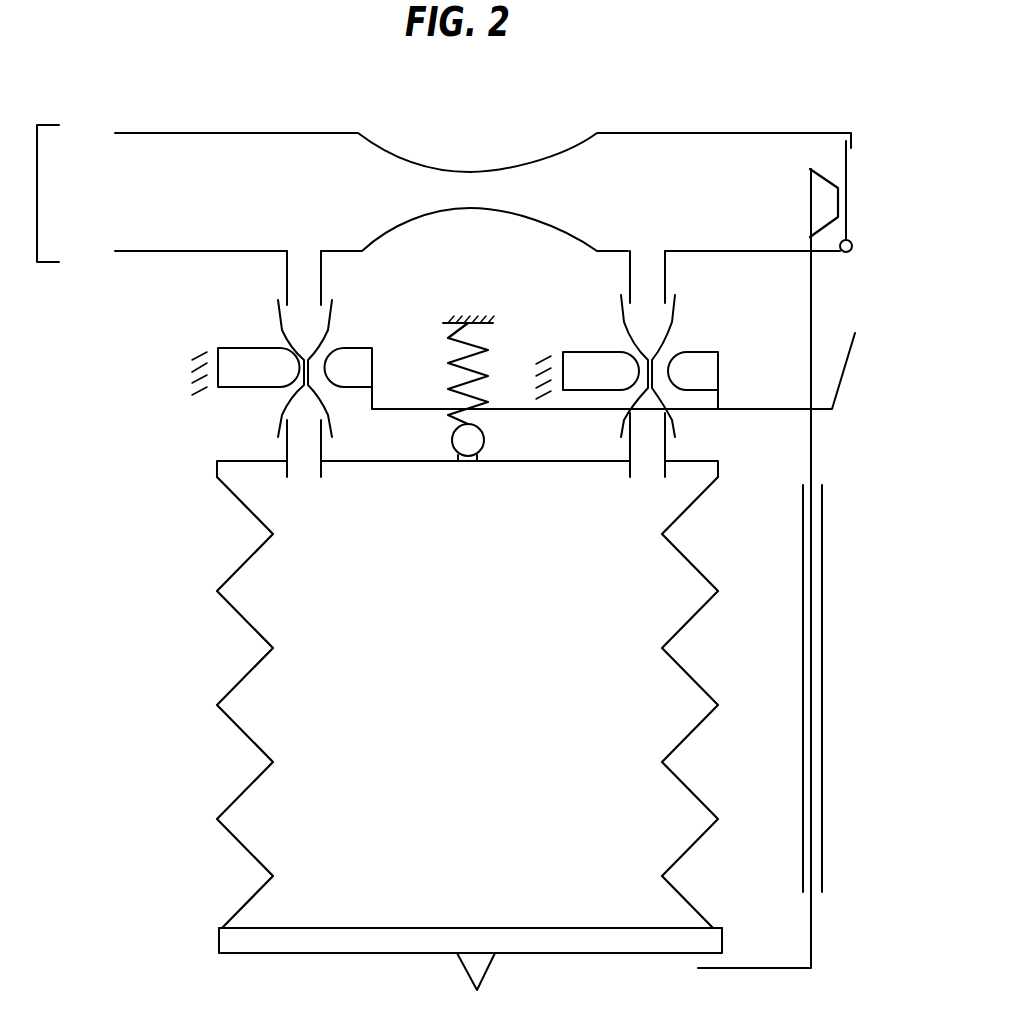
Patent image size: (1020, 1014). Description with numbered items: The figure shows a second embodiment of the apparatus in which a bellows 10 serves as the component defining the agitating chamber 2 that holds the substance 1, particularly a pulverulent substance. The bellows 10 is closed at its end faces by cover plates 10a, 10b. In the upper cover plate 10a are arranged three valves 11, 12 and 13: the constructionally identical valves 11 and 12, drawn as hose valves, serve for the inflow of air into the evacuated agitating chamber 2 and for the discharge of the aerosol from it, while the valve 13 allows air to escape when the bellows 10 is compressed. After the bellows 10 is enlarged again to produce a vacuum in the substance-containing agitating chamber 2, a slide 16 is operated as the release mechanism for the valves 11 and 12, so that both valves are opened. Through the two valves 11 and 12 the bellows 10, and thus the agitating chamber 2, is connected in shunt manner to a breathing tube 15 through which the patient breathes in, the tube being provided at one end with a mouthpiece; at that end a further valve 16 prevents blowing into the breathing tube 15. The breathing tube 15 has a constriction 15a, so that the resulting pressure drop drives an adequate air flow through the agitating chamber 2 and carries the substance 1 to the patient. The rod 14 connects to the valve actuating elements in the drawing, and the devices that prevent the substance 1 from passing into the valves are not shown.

The substance 1 is at (308, 928).
The agitating chamber 2 is at (476, 682).
The bellows 10 is at (774, 679).
The cover plate 10a is at (587, 467).
The cover plate 10b is at (650, 953).
The valve 11 is at (285, 342).
The valve 12 is at (675, 345).
The valve 13 is at (490, 340).
The lever rod 14 is at (813, 428).
The breathing tube 15 is at (610, 118).
The constriction 15a is at (463, 165).
The slide / valve 16 is at (853, 204).